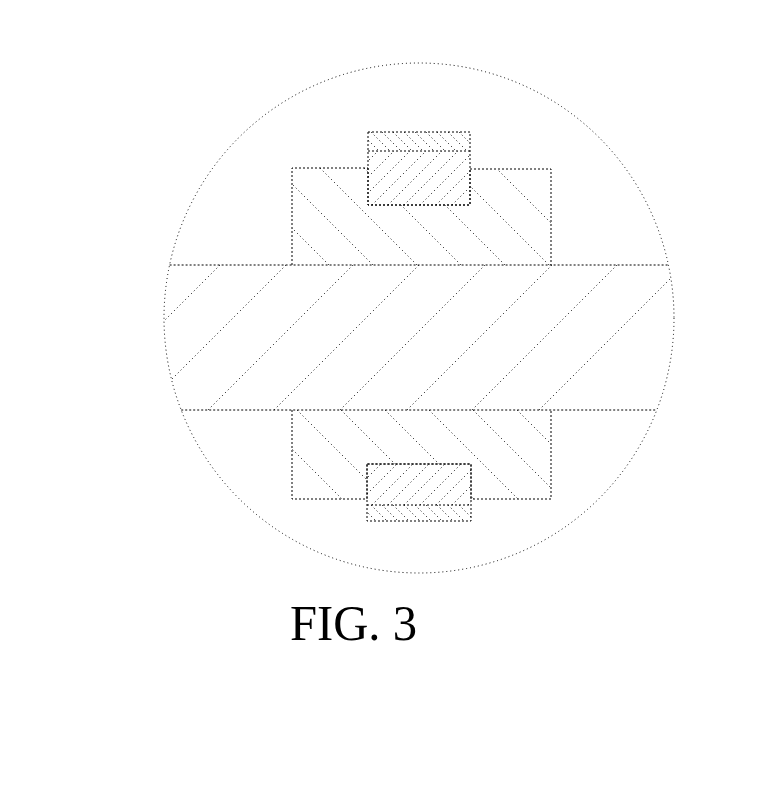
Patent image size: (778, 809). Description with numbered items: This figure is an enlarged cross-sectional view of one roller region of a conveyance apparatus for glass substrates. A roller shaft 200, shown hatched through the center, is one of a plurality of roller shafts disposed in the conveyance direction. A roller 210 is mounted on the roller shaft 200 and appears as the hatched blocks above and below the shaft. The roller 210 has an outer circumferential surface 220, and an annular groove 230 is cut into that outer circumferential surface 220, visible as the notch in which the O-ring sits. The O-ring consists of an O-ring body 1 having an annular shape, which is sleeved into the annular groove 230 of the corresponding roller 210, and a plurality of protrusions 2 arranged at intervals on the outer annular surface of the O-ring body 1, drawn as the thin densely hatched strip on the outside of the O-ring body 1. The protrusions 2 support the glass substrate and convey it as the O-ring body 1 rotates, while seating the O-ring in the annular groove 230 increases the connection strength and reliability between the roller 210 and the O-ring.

The roller shaft 200 is at (190, 325).
The roller 210 is at (308, 190).
The outer circumferential surface 220 is at (303, 167).
The annular groove 230 is at (367, 175).
The O-ring body 1 is at (413, 133).
The protrusion 2 is at (468, 133).